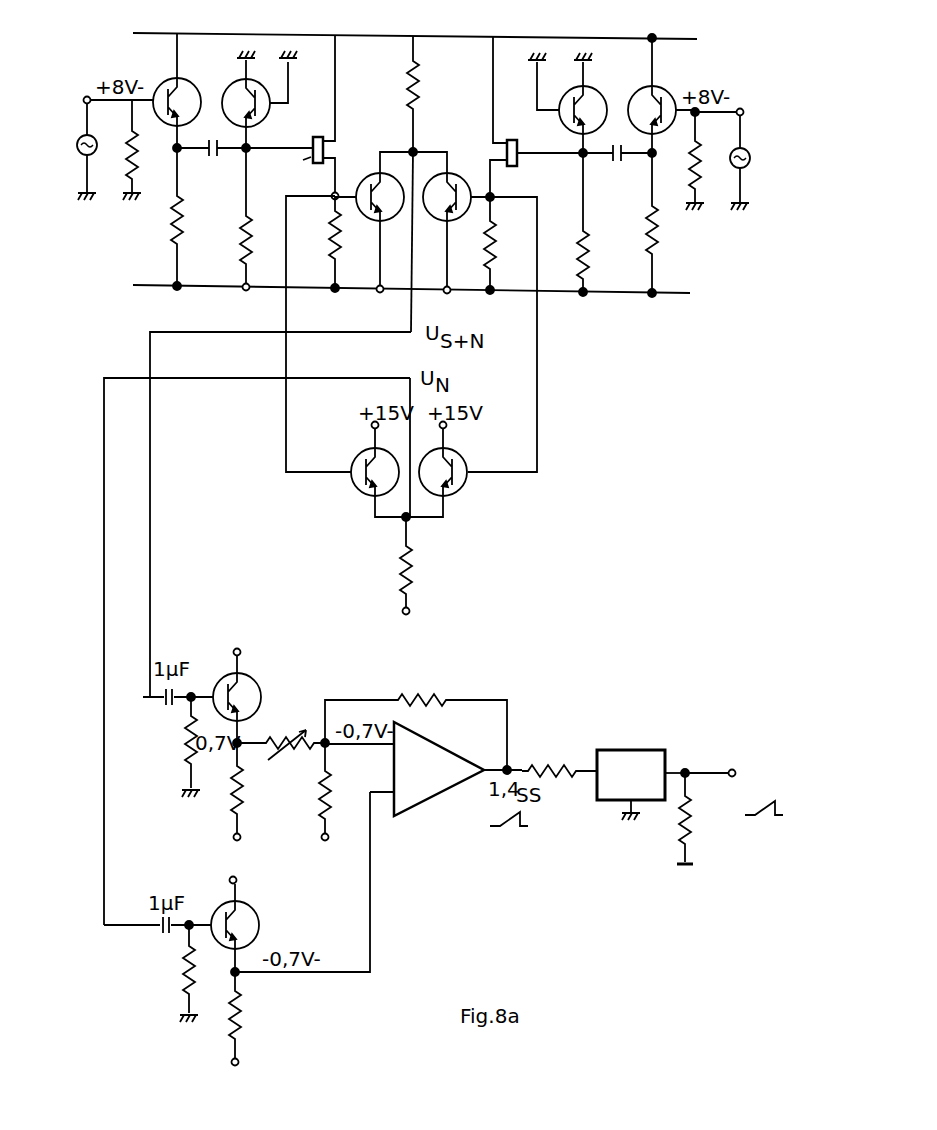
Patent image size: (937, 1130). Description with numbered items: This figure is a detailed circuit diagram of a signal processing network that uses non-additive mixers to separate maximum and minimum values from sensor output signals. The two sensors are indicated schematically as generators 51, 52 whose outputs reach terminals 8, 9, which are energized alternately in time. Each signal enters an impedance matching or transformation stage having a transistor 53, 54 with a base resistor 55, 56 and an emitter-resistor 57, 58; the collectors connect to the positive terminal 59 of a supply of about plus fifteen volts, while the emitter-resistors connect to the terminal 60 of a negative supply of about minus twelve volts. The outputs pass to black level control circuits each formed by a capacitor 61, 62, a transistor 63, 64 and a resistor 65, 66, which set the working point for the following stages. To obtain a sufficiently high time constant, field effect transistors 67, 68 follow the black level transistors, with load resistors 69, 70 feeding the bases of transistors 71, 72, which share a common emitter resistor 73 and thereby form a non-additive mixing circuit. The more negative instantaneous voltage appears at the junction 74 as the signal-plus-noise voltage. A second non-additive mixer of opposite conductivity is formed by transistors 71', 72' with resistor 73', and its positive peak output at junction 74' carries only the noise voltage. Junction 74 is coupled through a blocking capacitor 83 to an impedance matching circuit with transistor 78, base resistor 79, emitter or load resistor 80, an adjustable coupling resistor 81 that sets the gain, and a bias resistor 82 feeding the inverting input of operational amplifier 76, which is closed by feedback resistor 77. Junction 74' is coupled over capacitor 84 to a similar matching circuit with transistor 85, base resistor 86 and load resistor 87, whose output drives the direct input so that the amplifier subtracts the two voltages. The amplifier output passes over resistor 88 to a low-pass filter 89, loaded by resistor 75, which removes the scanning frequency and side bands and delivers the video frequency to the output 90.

The terminal 8 is at (107, 110).
The terminal 9 is at (726, 116).
The generator 51 is at (97, 138).
The generator 52 is at (746, 164).
The transistor 53 is at (192, 89).
The transistor 54 is at (660, 91).
The base resistor 55 is at (153, 150).
The base resistor 56 is at (702, 155).
The emitter-resistor 57 is at (180, 230).
The emitter-resistor 58 is at (652, 226).
The positive terminal 59 is at (216, 33).
The negative terminal 60 is at (191, 286).
The capacitor 61 is at (220, 124).
The capacitor 62 is at (625, 135).
The transistor 63 is at (256, 89).
The transistor 64 is at (598, 93).
The resistor 65 is at (248, 250).
The resistor 66 is at (587, 252).
The field effect transistor 67 is at (304, 115).
The field effect transistor 68 is at (537, 117).
The load resistor 69 is at (330, 251).
The load resistor 70 is at (492, 248).
The transistor 71 is at (374, 220).
The transistor 72 is at (451, 221).
The common emitter resistor 73 is at (409, 94).
The junction 74 is at (412, 229).
The transistor 71' is at (362, 470).
The transistor 72' is at (451, 470).
The resistor 73' is at (411, 581).
The junction 74' is at (403, 519).
The resistor 75 is at (699, 818).
The operational amplifier 76 is at (449, 752).
The feedback resistor 77 is at (439, 698).
The transistor 78 is at (262, 688).
The base resistor 79 is at (186, 730).
The emitter or load resistor 80 is at (240, 794).
The coupling resistor 81 is at (281, 745).
The bias resistor 82 is at (316, 802).
The capacitor 83 is at (182, 733).
The coupling capacitor 84 is at (168, 940).
The transistor 85 is at (260, 918).
The base resistor 86 is at (192, 980).
The load resistor 87 is at (239, 1010).
The resistor 88 is at (546, 780).
The low-pass filter 89 is at (663, 770).
The output 90 is at (730, 772).